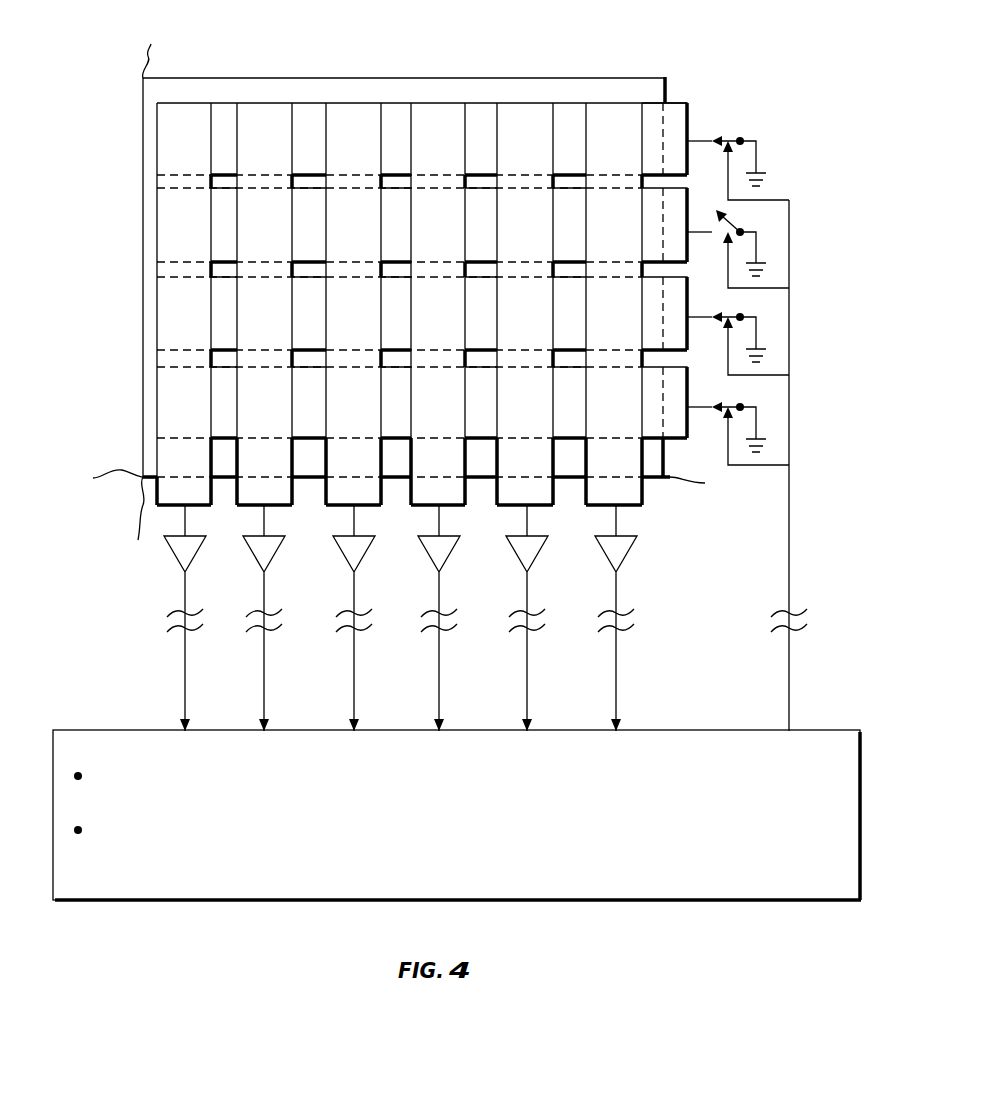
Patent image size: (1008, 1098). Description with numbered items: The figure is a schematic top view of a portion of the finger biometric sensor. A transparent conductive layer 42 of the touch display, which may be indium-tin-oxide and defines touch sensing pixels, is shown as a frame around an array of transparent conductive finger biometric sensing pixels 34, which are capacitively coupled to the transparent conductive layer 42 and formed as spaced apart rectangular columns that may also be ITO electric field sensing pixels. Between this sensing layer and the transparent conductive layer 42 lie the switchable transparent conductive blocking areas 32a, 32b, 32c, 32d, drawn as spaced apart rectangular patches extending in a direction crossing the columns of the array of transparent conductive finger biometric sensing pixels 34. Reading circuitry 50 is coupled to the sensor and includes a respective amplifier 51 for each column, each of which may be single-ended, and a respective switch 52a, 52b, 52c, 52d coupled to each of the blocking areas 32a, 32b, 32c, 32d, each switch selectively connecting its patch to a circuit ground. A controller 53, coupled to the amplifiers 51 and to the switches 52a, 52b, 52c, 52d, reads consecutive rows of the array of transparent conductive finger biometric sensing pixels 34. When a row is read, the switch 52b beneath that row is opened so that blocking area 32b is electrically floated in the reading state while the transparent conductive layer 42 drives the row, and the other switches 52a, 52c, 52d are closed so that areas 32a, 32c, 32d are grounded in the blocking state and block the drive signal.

The transparent conductive layer 42 is at (155, 93).
The array of transparent conductive finger biometric sensing pixels 34 is at (350, 115).
The switchable transparent conductive blocking area 32a is at (229, 152).
The switchable transparent conductive blocking area 32b is at (229, 232).
The switchable transparent conductive blocking area 32c is at (229, 321).
The switchable transparent conductive blocking area 32d is at (223, 409).
The switch 52a is at (735, 140).
The switch 52b is at (724, 222).
The switch 52c is at (735, 316).
The switch 52d is at (735, 406).
The amplifiers 51 is at (338, 560).
The reading circuitry 50 is at (813, 595).
The controller 53 is at (105, 730).